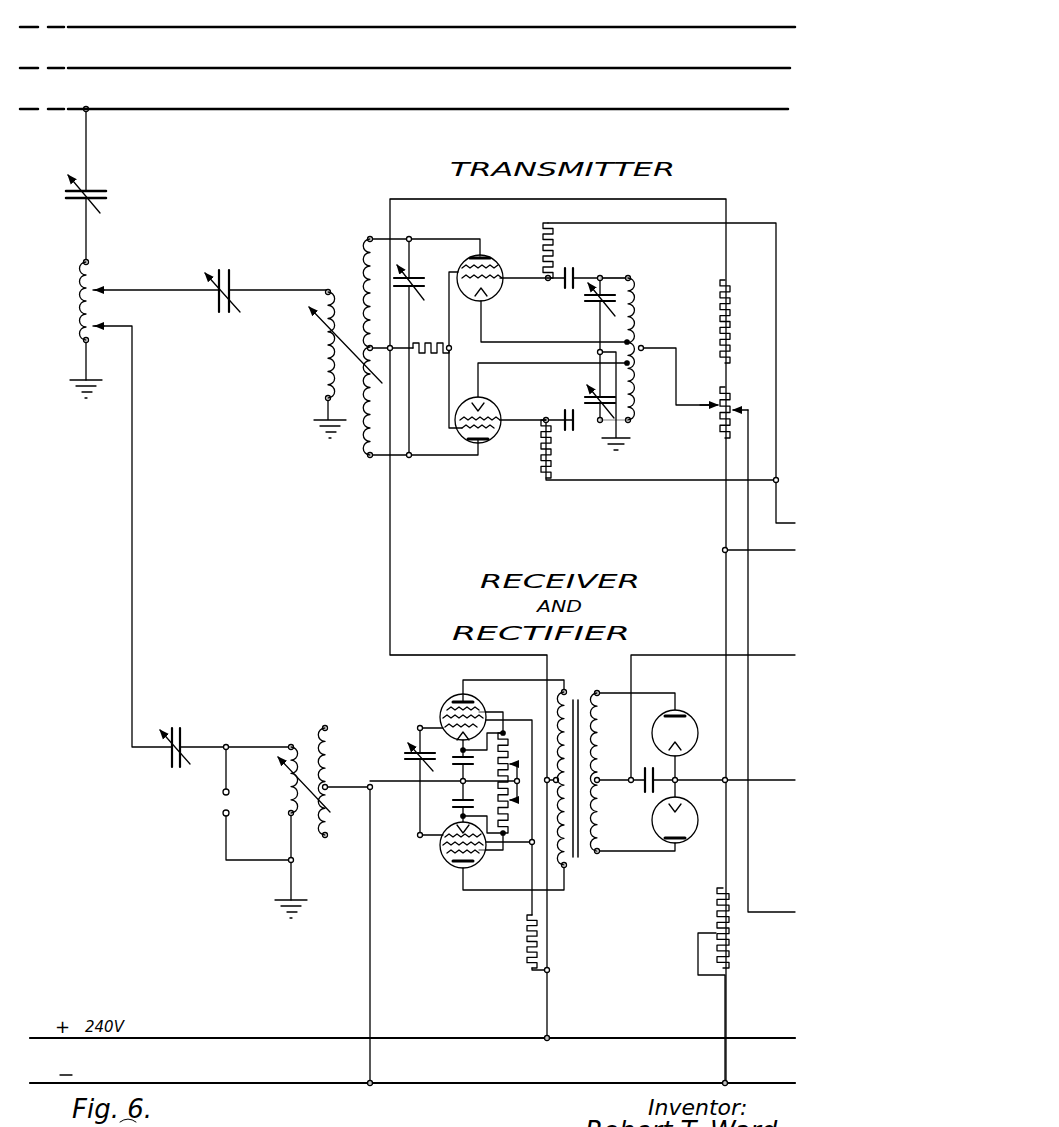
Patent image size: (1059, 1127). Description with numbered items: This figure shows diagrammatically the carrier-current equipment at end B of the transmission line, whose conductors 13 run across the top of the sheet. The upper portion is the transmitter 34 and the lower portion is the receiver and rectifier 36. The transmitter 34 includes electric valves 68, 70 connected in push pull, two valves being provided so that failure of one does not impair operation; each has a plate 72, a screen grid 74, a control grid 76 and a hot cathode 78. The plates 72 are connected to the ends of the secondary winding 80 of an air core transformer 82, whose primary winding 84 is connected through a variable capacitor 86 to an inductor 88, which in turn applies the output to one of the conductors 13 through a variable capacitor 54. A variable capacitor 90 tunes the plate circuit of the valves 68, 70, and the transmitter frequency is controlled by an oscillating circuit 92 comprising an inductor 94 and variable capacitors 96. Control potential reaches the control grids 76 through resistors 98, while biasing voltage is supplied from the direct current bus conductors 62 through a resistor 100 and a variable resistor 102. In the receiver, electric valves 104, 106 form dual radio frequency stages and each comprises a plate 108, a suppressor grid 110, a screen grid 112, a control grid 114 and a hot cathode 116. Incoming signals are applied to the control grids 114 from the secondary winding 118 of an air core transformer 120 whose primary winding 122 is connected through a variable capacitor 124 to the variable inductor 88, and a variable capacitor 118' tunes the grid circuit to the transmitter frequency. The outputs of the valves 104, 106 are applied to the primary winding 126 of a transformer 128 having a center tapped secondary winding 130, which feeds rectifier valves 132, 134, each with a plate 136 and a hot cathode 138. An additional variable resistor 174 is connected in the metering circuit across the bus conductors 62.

The conductors 13 is at (760, 27).
The transmitter 34 is at (363, 198).
The receiver and rectifier 36 is at (622, 651).
The variable capacitor 54 is at (62, 196).
The conductors 62 is at (621, 1039).
The electric valve 68 is at (498, 243).
The electric valve 70 is at (493, 451).
The plate 72 is at (470, 254).
The screen grid 74 is at (496, 260).
The control grid 76 is at (501, 277).
The hot cathode 78 is at (488, 289).
The secondary winding 80 is at (357, 433).
The air core transformer 82 is at (324, 256).
The primary winding 84 is at (324, 347).
The variable capacitor 86 is at (217, 317).
The inductor 88 is at (76, 298).
The variable capacitor 90 is at (409, 288).
The oscillating circuit 92 is at (650, 277).
The inductor 94 is at (643, 313).
The variable capacitor 96 is at (583, 301).
The resistor 98 is at (552, 254).
The resistor 100 is at (729, 321).
The variable resistor 102 is at (727, 398).
The electric valve 104 is at (433, 702).
The electric valve 106 is at (443, 878).
The plate 108 is at (457, 700).
The suppressor grid 110 is at (473, 707).
The screen grid 112 is at (443, 711).
The control grid 114 is at (443, 725).
The hot cathode 116 is at (446, 753).
The secondary winding 118 is at (341, 781).
The variable capacitor 118' is at (401, 757).
The air core transformer 120 is at (301, 729).
The primary winding 122 is at (288, 798).
The variable capacitor 124 is at (177, 727).
The primary winding 126 is at (570, 695).
The transformer 128 is at (576, 864).
The center tapped secondary winding 130 is at (597, 742).
The rectifier valve 132 is at (694, 709).
The rectifier valve 134 is at (686, 848).
The plate 136 is at (674, 711).
The hot cathode 138 is at (678, 742).
The variable resistor 174 is at (731, 943).